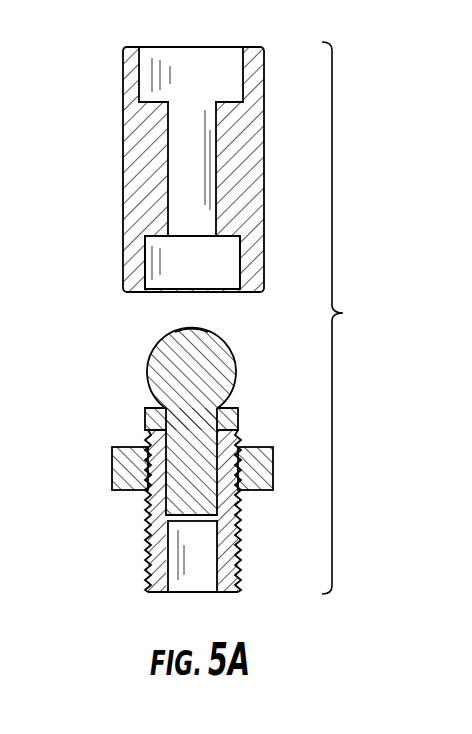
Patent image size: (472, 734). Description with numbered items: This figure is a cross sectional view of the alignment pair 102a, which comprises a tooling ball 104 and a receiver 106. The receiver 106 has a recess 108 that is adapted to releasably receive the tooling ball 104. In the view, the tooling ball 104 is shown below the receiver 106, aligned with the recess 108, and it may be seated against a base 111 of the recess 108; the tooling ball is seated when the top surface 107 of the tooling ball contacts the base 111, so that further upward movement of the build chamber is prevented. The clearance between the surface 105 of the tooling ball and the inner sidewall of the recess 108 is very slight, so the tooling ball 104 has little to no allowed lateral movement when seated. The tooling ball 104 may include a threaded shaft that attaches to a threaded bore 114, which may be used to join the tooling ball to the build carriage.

The alignment pair 102a is at (361, 318).
The tooling ball 104 is at (145, 409).
The surface of the tooling ball 105 is at (237, 376).
The receiver 106 is at (123, 157).
The top surface of the tooling ball 107 is at (197, 330).
The recess 108 is at (170, 292).
The base of the recess 111 is at (204, 240).
The threaded bore 114 is at (240, 447).